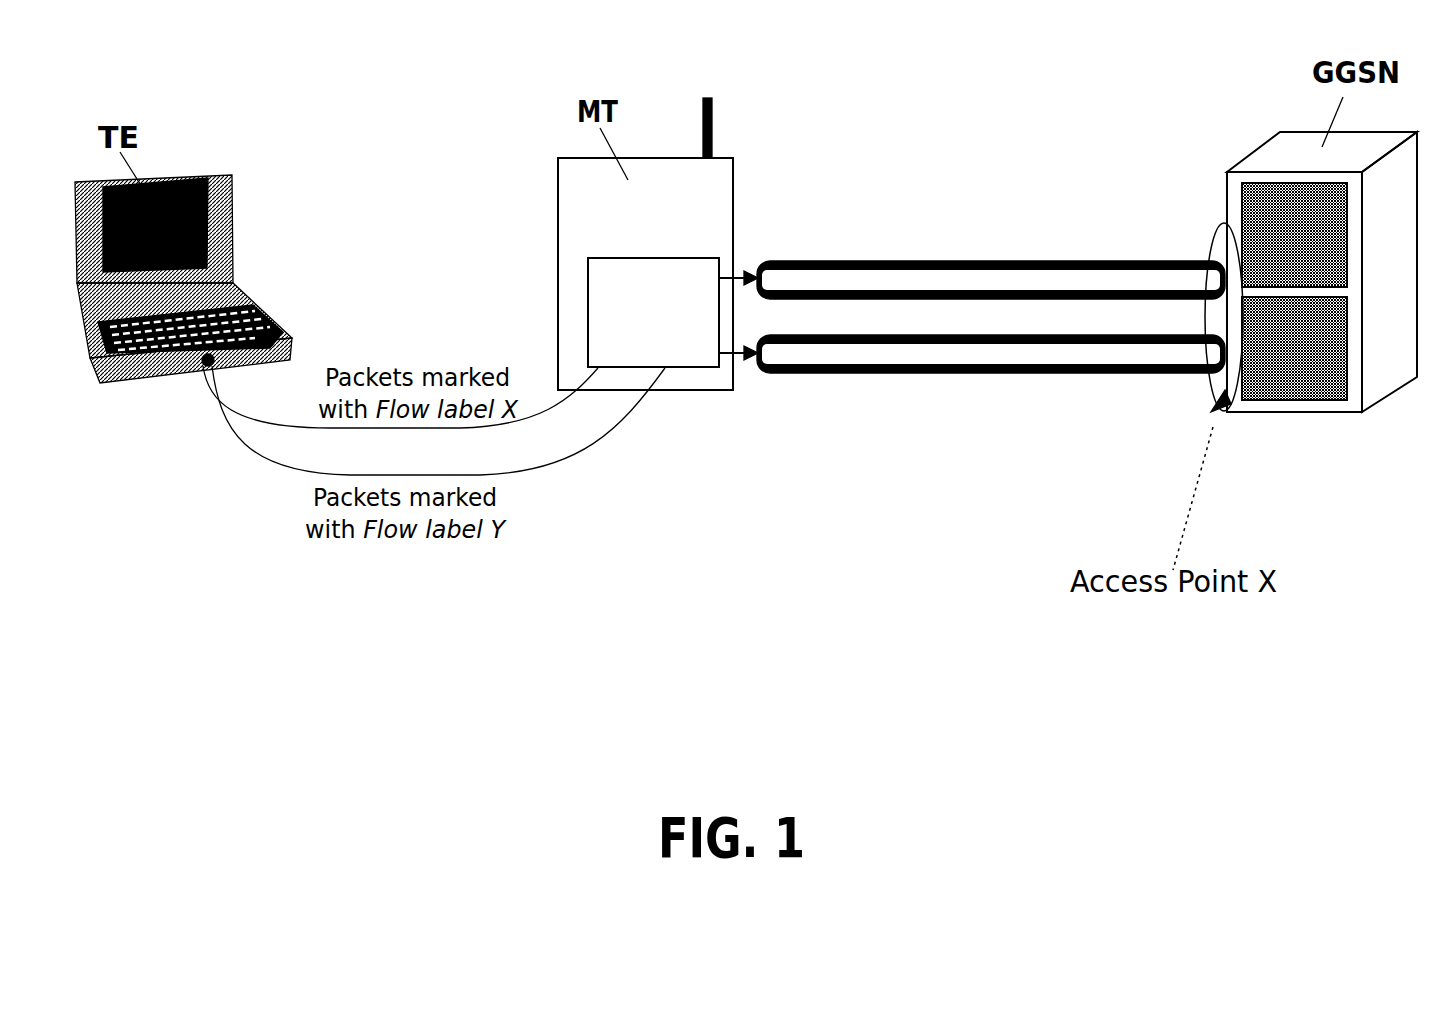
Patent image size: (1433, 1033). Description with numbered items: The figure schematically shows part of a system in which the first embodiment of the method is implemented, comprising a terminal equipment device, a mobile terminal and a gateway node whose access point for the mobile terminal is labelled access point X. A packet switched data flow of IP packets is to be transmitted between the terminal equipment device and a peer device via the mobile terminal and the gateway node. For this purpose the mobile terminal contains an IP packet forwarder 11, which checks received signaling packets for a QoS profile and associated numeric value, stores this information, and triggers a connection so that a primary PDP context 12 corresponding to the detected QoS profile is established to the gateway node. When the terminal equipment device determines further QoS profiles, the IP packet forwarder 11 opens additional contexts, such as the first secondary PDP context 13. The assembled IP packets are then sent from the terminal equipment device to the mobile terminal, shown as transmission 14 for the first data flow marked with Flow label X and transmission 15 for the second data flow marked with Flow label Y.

The IP packet forwarder 11 is at (687, 350).
The primary PDP context 12 is at (800, 280).
The first secondary PDP context 13 is at (797, 353).
The transmission 14 is at (235, 410).
The transmission 15 is at (255, 460).